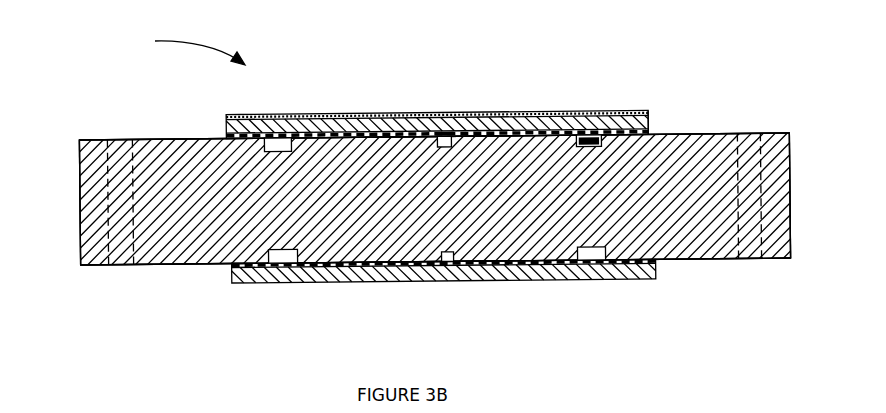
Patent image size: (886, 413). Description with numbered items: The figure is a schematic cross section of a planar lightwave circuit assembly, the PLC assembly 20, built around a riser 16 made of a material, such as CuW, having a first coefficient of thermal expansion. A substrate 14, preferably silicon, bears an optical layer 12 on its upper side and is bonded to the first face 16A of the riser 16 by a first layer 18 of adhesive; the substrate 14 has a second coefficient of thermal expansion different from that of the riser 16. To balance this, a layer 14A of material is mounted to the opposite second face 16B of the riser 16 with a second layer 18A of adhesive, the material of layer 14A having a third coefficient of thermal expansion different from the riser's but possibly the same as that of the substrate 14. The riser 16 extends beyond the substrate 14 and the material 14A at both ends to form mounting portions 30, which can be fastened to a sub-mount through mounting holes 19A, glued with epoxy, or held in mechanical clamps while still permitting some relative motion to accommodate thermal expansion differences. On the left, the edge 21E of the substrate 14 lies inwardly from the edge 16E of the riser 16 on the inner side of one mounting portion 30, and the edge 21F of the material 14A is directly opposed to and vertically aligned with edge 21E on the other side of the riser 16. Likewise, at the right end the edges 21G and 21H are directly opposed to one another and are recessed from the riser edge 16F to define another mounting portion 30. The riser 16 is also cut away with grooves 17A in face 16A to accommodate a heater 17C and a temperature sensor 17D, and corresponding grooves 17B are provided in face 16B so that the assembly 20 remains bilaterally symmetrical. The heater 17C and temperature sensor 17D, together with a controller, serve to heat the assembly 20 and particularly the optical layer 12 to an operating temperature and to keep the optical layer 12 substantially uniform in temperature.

The PLC assembly 20 is at (181, 49).
The mounting portion 30 is at (181, 238).
The riser 16 is at (96, 247).
The first face of riser 16A is at (157, 139).
The second face of riser 16B is at (148, 267).
The edge of riser 16E is at (80, 198).
The edge of riser 16F is at (790, 222).
The optical layer 12 is at (242, 113).
The substrate 14 is at (400, 125).
The first layer of adhesive 18 is at (653, 132).
The second layer of adhesive 18A is at (655, 265).
The layer of material 14A is at (342, 275).
The edge of substrate 21E is at (227, 128).
The edge of material layer 21F is at (233, 282).
The edge of substrate 21G is at (650, 121).
The edge of material layer 21H is at (655, 278).
The mounting hole 19A is at (118, 267).
The groove 17A is at (450, 130).
The groove 17B is at (453, 275).
The heater 17C is at (593, 135).
The temperature sensor 17D is at (445, 135).